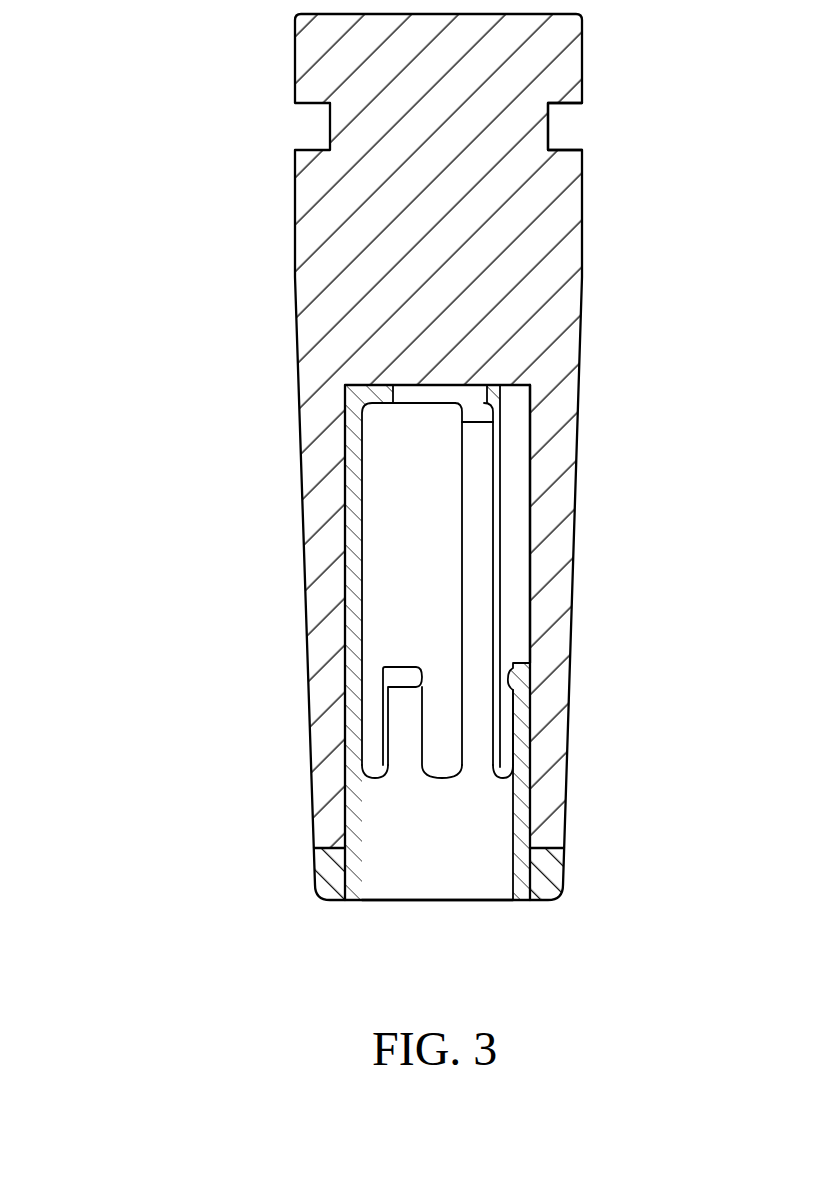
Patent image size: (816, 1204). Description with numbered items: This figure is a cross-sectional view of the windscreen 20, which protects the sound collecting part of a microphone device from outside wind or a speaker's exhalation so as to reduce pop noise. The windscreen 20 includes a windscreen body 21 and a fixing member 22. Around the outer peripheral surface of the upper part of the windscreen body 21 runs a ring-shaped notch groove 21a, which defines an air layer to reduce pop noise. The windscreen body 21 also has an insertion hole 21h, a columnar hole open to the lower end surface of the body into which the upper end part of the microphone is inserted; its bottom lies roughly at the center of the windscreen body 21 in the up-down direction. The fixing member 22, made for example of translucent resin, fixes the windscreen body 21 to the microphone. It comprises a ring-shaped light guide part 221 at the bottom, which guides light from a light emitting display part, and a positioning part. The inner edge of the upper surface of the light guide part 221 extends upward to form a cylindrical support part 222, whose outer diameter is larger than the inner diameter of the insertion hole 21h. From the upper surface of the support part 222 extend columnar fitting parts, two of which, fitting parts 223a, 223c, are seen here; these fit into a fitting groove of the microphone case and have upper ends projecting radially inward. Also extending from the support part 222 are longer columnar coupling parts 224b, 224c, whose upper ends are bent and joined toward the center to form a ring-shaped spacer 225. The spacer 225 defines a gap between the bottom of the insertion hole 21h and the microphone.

The windscreen 20 is at (135, 55).
The windscreen body 21 is at (580, 280).
The notch groove 21a is at (563, 104).
The insertion hole 21h is at (532, 453).
The fixing member 22 is at (425, 905).
The light guide part 221 is at (563, 871).
The support part 222 is at (393, 818).
The fitting part 223a is at (532, 688).
The fitting part 223c is at (390, 667).
The coupling part 224b is at (362, 595).
The coupling part 224c is at (462, 523).
The spacer 225 is at (418, 404).